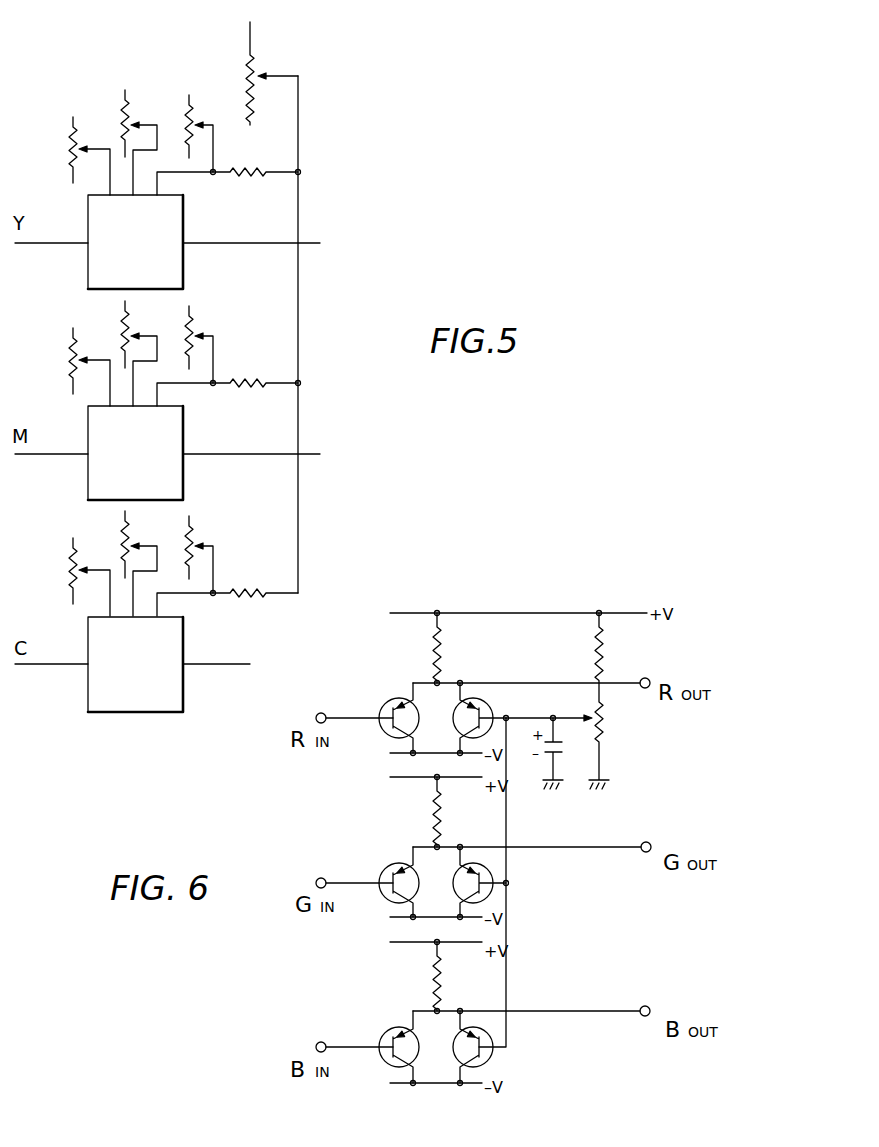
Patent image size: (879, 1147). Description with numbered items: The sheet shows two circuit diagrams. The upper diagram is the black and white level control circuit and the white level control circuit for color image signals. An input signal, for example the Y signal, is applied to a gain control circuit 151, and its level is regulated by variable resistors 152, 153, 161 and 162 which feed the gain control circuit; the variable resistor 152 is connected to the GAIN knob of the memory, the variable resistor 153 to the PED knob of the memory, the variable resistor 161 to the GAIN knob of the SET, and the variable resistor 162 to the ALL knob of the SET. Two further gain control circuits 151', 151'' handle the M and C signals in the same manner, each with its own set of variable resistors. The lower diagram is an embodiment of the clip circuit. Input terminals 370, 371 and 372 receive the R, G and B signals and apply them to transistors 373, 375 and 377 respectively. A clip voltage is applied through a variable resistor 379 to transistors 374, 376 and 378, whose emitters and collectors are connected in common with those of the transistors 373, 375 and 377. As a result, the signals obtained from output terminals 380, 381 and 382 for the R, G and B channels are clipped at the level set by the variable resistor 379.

In FIG. 5, the gain control circuit 151 is at (100, 245).
In FIG. 5, the gain control circuit 151' is at (99, 455).
In FIG. 5, the gain control circuit 151'' is at (126, 693).
In FIG. 5, the variable resistor 152 is at (187, 110).
In FIG. 5, the variable resistor 153 is at (70, 150).
In FIG. 5, the variable resistor 161 is at (123, 110).
In FIG. 5, the variable resistor 162 is at (248, 60).
In FIG. 6, the input terminal 370 is at (322, 712).
In FIG. 6, the input terminal 371 is at (324, 877).
In FIG. 6, the input terminal 372 is at (321, 1041).
In FIG. 6, the transistor 373 is at (388, 700).
In FIG. 6, the transistor 374 is at (490, 700).
In FIG. 6, the transistor 375 is at (386, 863).
In FIG. 6, the transistor 376 is at (480, 864).
In FIG. 6, the transistor 377 is at (390, 1028).
In FIG. 6, the transistor 378 is at (495, 1058).
In FIG. 6, the variable resistor 379 is at (610, 722).
In FIG. 6, the output terminal 380 is at (650, 678).
In FIG. 6, the output terminal 381 is at (652, 840).
In FIG. 6, the output terminal 382 is at (652, 1009).